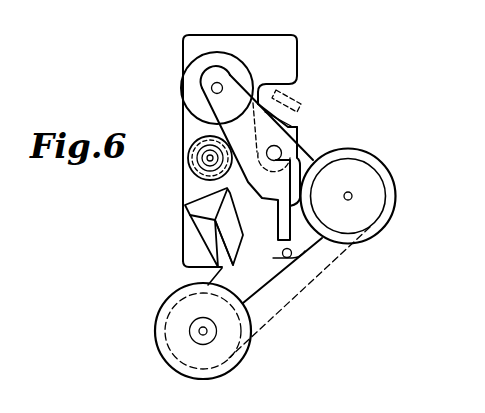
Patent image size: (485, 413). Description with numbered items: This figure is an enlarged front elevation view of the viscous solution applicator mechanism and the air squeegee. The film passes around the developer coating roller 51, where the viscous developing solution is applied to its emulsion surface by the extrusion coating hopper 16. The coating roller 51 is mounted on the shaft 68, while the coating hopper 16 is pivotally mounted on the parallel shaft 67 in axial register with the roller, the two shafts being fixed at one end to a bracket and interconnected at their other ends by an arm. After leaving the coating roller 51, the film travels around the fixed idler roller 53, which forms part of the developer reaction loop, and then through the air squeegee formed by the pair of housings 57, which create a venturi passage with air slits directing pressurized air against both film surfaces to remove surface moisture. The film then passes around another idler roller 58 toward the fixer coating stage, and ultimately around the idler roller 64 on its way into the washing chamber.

The extrusion coating hopper 16 is at (303, 140).
The developer coating roller 51 is at (193, 72).
The fixed idler roller 53 is at (228, 363).
The housings 57 is at (200, 231).
The idler roller 58 is at (190, 160).
The idler roller 64 is at (388, 208).
The shaft 67 is at (281, 152).
The shaft 68 is at (218, 83).